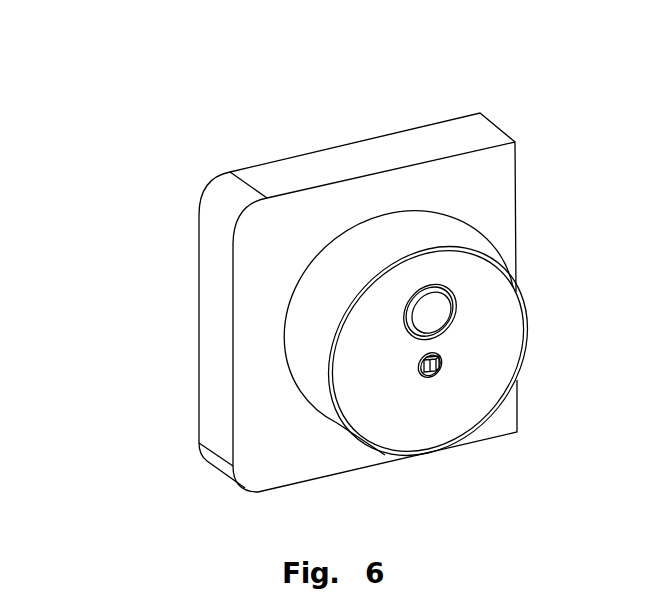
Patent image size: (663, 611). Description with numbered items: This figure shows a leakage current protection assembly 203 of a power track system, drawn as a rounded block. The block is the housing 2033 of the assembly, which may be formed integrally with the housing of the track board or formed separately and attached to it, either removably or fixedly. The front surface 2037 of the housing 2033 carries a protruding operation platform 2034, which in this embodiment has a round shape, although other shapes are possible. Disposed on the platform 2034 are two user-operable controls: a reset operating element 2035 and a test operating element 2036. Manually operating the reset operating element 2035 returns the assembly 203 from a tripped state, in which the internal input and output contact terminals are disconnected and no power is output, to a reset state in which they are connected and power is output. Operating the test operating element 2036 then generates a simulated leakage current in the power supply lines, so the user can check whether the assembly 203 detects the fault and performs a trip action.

The leakage current protection assembly 203 is at (310, 283).
The housing 2033 is at (218, 335).
The operation platform 2034 is at (430, 435).
The reset operating element 2035 is at (450, 293).
The test operating element 2036 is at (441, 360).
The front surface 2037 is at (270, 430).